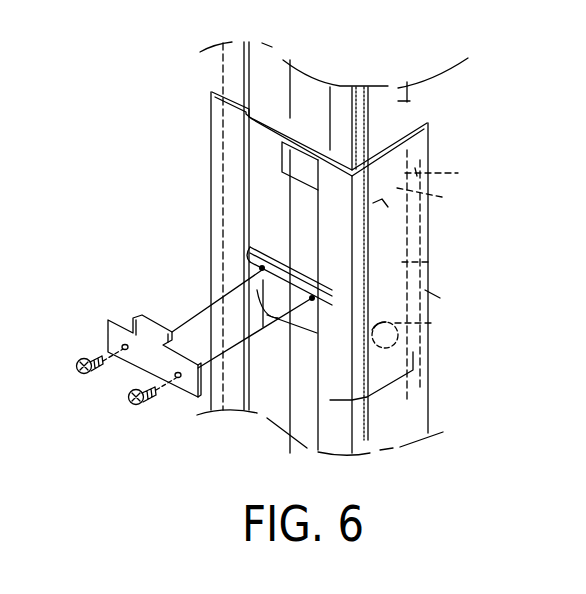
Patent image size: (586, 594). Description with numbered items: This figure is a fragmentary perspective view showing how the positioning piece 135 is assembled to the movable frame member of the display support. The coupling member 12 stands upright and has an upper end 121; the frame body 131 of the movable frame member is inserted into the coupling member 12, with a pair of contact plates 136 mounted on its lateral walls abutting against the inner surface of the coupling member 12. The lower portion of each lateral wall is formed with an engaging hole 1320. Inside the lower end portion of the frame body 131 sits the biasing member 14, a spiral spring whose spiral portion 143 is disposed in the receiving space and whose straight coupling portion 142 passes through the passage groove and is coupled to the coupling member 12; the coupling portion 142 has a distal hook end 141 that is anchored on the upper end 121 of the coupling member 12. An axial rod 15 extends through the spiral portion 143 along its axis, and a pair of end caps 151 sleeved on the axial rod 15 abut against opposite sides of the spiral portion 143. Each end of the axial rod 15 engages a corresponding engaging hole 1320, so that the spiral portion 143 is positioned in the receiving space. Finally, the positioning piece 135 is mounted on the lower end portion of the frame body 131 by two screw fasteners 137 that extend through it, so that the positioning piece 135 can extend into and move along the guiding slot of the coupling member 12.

The coupling member 12 is at (449, 144).
The upper end 121 is at (210, 146).
The frame body 131 is at (452, 170).
The engaging hole 1320 is at (445, 323).
The positioning piece 135 is at (105, 333).
The contact plates 136 is at (398, 103).
The screw fasteners 137 is at (130, 396).
The biasing member 14 is at (308, 360).
The distal hook end 141 is at (442, 197).
The coupling portion 142 is at (447, 262).
The spiral portion 143 is at (305, 338).
The axial rod 15 is at (430, 348).
The end caps 151 is at (440, 298).